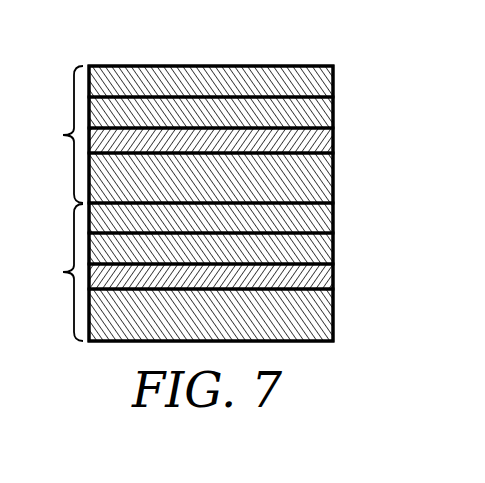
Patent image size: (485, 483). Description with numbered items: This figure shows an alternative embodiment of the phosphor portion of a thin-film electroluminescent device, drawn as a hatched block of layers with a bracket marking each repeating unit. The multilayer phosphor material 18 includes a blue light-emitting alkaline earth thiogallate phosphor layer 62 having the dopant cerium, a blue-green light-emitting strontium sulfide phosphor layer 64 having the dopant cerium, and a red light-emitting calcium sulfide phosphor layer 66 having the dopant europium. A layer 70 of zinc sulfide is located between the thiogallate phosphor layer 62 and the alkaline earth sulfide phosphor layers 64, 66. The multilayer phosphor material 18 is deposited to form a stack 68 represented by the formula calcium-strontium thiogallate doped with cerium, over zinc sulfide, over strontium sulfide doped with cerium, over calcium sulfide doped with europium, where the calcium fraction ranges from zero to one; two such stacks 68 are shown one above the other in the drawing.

The multilayer phosphor material 18 is at (278, 54).
The blue light-emitting alkaline earth thiogallate phosphor layer 62 is at (333, 178).
The blue-green light-emitting strontium sulfide phosphor layer 64 is at (333, 110).
The red light-emitting calcium sulfide phosphor layer 66 is at (333, 78).
The stack 68 is at (58, 203).
The layer of zinc sulfide 70 is at (333, 138).